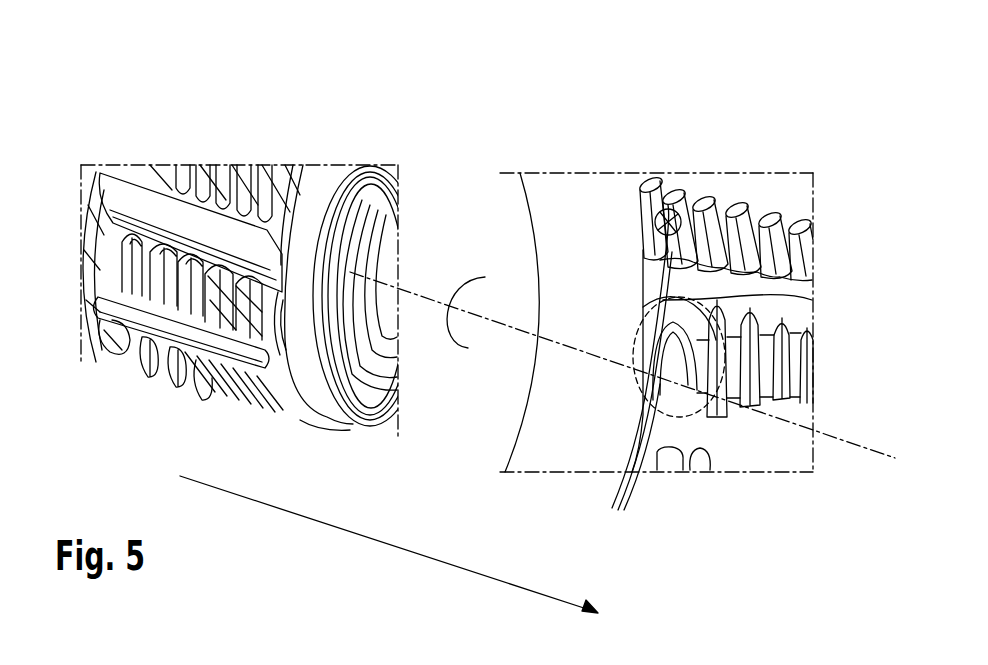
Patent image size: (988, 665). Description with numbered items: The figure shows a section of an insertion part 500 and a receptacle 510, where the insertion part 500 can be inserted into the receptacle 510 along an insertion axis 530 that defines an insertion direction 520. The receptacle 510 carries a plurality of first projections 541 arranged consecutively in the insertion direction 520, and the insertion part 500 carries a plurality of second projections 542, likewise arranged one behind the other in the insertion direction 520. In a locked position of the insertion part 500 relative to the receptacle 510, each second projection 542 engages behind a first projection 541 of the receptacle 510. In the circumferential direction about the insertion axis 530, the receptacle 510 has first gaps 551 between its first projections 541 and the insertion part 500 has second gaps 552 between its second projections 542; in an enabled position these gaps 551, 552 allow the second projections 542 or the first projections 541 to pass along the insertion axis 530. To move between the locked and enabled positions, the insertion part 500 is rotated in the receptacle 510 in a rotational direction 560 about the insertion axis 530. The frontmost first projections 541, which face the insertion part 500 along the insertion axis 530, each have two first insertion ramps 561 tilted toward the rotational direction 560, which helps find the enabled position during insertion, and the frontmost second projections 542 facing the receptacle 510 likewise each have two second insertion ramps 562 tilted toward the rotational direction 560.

The insertion part 500 is at (231, 235).
The receptacle 510 is at (701, 287).
The insertion direction 520 is at (488, 580).
The insertion axis 530 is at (845, 432).
The first projections 541 is at (770, 423).
The second projections 542 is at (236, 404).
The first gaps 551 is at (797, 448).
The second gaps 552 is at (126, 192).
The rotational direction 560 is at (484, 292).
The first insertion ramps 561 is at (620, 366).
The second insertion ramps 562 is at (310, 165).